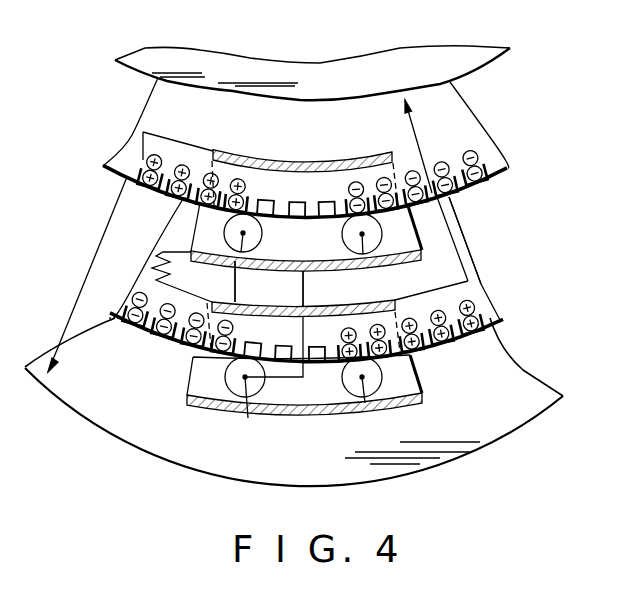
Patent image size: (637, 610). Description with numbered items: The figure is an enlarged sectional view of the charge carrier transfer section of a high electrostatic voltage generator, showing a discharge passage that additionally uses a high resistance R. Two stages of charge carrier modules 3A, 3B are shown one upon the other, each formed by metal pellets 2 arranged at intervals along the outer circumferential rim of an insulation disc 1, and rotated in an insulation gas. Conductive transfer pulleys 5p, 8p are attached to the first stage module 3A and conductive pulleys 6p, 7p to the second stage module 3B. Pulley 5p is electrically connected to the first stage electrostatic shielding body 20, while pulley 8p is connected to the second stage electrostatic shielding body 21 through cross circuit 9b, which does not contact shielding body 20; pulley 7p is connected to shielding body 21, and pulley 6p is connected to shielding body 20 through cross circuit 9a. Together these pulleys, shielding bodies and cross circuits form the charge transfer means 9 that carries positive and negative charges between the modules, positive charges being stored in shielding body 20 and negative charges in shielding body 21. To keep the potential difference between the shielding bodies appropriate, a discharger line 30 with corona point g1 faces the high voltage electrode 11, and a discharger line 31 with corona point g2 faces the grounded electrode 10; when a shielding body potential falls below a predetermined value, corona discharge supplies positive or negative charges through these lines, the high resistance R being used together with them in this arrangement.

The insulation disc 1 is at (467, 116).
The metal pellets 2 is at (151, 184).
The first stage charge carrier module 3A is at (504, 325).
The second stage charge carrier module 3B is at (508, 170).
The conductive transfer pulley 5p is at (347, 389).
The conductive pulley 6p is at (261, 229).
The conductive pulley 7p is at (344, 238).
The conductive transfer pulley 8p is at (245, 399).
The charge transfer means 9 is at (275, 299).
The cross circuit 9a is at (233, 281).
The cross circuit 9b is at (304, 291).
The grounded electrode 10 is at (494, 442).
The high voltage electrode 11 is at (300, 98).
The first stage electrostatic shielding body 20 is at (418, 404).
The second stage electrostatic shielding body 21 is at (407, 263).
The discharger line 30 is at (466, 252).
The discharger line 31 is at (87, 272).
The high resistance R is at (150, 262).
The corona point g1 is at (421, 144).
The corona point g2 is at (62, 376).